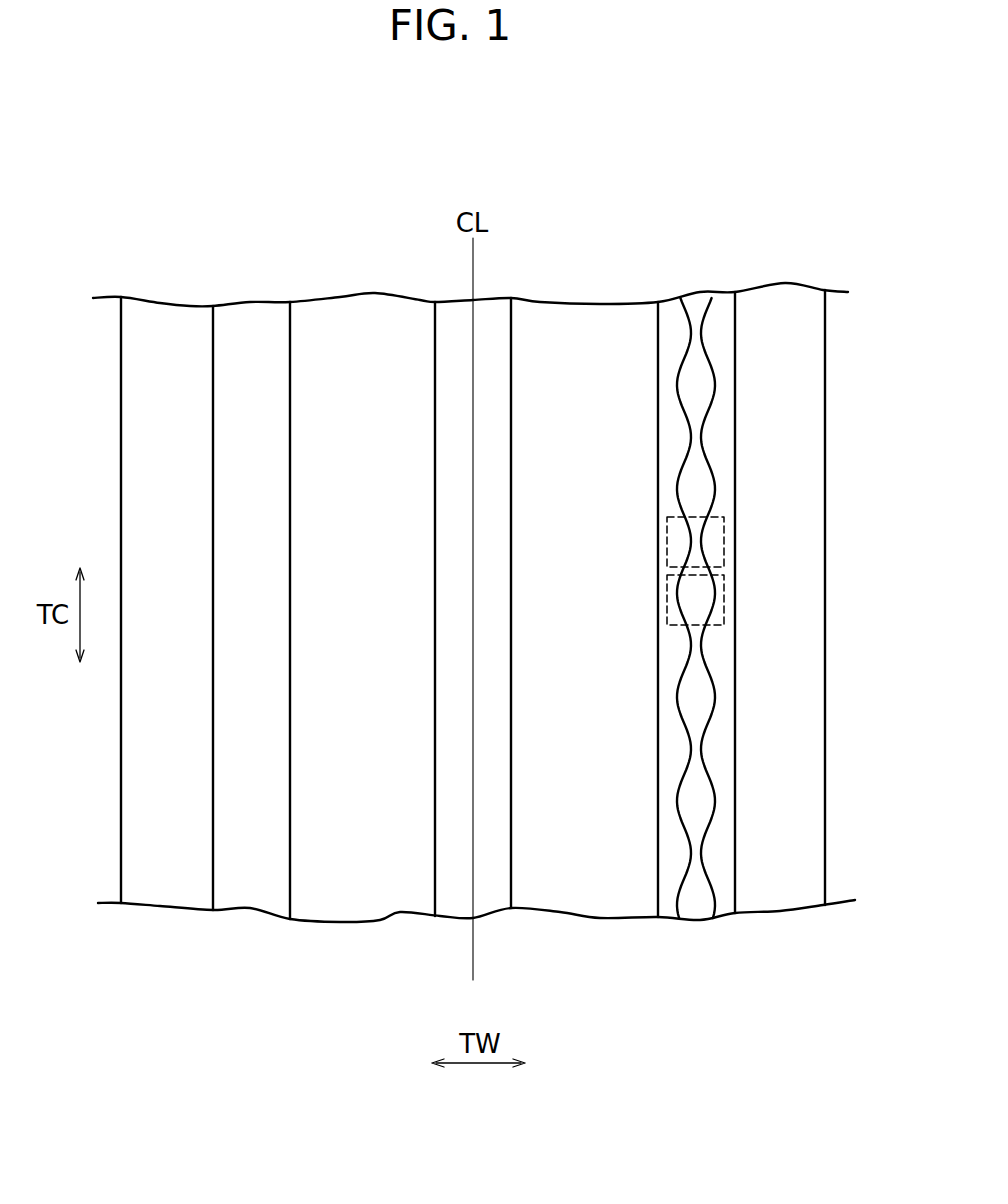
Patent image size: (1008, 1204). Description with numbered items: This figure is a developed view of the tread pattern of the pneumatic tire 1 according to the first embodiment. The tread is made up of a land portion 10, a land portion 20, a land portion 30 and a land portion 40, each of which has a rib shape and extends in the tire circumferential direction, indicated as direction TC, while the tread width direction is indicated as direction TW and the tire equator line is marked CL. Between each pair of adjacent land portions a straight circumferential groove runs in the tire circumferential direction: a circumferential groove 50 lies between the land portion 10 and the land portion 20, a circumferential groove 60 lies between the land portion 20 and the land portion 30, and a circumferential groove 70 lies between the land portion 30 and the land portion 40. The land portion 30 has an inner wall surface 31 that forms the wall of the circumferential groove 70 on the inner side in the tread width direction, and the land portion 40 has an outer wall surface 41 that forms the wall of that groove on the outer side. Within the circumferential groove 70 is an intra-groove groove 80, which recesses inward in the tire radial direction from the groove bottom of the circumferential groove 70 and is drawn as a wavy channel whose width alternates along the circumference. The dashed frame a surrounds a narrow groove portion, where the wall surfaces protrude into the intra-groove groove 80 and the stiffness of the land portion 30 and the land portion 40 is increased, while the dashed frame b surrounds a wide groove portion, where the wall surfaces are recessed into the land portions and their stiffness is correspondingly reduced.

The pneumatic tire 1 is at (590, 183).
The land portion 10 is at (163, 340).
The land portion 20 is at (357, 340).
The land portion 30 is at (580, 340).
The inner wall surface 31 is at (658, 373).
The land portion 40 is at (782, 338).
The outer wall surface 41 is at (736, 386).
The circumferential groove 50 is at (249, 340).
The circumferential groove 60 is at (455, 340).
The circumferential groove 70 is at (722, 310).
The intra-groove groove 80 is at (693, 307).
The frame a is at (728, 535).
The frame b is at (728, 593).